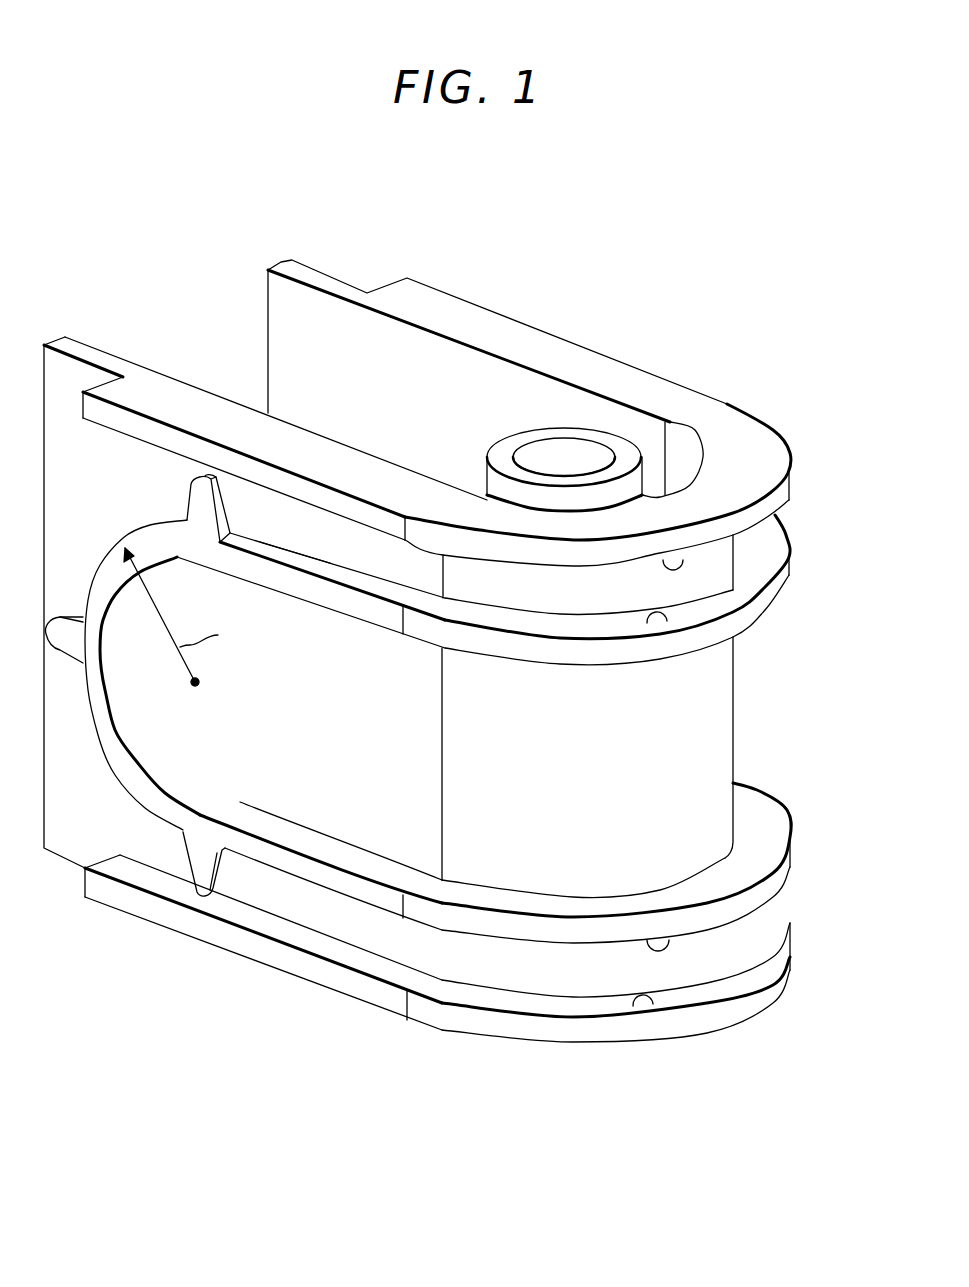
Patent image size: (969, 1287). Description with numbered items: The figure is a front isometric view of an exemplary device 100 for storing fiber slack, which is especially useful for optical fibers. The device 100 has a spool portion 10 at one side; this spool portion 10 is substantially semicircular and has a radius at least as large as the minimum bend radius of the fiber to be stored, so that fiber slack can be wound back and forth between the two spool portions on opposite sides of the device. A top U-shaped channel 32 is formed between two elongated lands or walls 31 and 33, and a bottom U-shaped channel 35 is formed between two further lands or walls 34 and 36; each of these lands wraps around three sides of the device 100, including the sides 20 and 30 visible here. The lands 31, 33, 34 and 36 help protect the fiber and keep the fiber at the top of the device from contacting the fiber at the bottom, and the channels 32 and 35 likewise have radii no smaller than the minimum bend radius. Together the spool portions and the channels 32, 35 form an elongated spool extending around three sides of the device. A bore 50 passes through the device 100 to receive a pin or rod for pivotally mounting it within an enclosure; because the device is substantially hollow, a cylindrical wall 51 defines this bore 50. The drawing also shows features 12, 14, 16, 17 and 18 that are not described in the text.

The device 100 is at (481, 184).
The spool portion 10 is at (261, 692).
The mounting plate 12 is at (127, 783).
The tabs 14 is at (80, 616).
The arms 16 is at (397, 567).
The lower arm surface 17 is at (363, 948).
The upper leg surface 18 is at (320, 563).
The side of the device 20 is at (288, 754).
The side of the device 30 is at (622, 762).
The land or wall 31 is at (655, 625).
The top U-shaped channel 32 is at (757, 562).
The land or wall 33 is at (665, 562).
The land or wall 34 is at (667, 940).
The bottom U-shaped channel 35 is at (703, 953).
The land or wall 36 is at (647, 1007).
The bore 50 is at (557, 453).
The cylindrical wall 51 is at (483, 485).